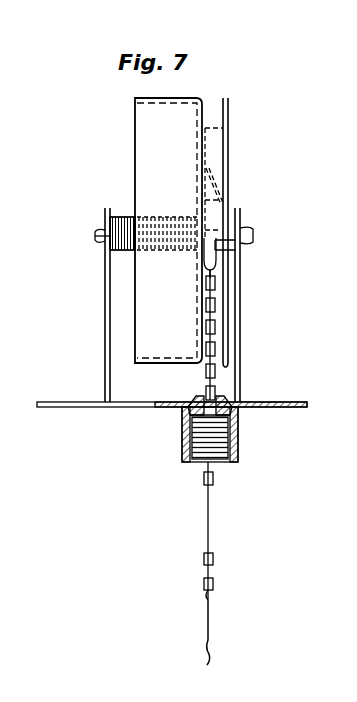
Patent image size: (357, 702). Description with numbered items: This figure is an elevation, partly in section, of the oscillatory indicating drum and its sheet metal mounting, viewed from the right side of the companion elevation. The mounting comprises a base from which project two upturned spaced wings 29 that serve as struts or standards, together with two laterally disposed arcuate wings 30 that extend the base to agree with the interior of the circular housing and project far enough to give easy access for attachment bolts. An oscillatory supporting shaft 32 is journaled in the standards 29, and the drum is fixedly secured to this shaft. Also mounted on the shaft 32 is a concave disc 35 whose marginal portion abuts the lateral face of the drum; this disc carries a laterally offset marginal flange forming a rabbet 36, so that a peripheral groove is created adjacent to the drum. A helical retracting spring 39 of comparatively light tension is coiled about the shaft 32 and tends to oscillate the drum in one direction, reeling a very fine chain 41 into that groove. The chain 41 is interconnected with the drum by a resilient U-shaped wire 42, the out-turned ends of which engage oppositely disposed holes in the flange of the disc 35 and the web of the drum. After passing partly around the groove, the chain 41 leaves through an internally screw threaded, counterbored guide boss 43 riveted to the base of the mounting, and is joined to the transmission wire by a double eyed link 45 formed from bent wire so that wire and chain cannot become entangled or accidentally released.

The upturned spaced wings 29 is at (105, 303).
The laterally disposed arcuate wings 30 is at (62, 392).
The oscillatory supporting shaft 32 is at (108, 250).
The concave disc 35 is at (229, 176).
The rabbet 36 is at (212, 126).
The helical retracting spring 39 is at (122, 216).
The chain 41 is at (216, 380).
The U-shaped wire 42 is at (225, 252).
The guide boss 43 is at (239, 441).
The double eyed link 45 is at (210, 627).